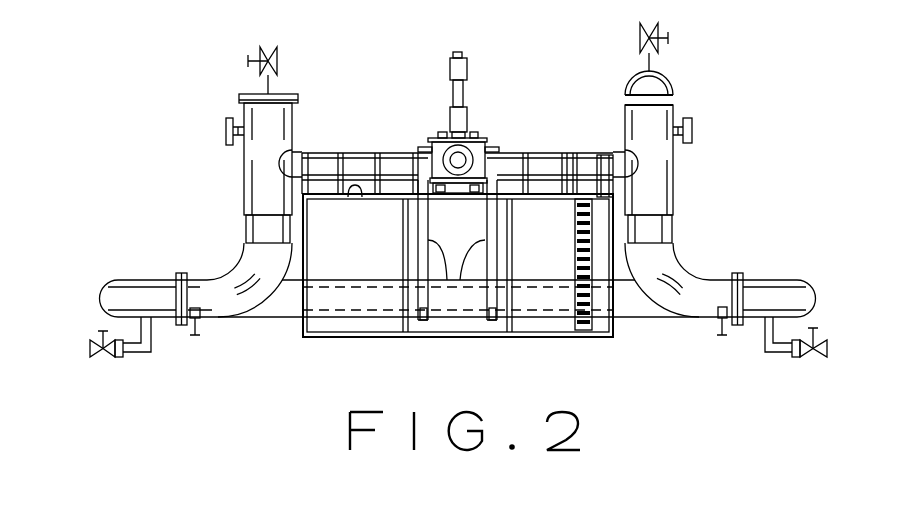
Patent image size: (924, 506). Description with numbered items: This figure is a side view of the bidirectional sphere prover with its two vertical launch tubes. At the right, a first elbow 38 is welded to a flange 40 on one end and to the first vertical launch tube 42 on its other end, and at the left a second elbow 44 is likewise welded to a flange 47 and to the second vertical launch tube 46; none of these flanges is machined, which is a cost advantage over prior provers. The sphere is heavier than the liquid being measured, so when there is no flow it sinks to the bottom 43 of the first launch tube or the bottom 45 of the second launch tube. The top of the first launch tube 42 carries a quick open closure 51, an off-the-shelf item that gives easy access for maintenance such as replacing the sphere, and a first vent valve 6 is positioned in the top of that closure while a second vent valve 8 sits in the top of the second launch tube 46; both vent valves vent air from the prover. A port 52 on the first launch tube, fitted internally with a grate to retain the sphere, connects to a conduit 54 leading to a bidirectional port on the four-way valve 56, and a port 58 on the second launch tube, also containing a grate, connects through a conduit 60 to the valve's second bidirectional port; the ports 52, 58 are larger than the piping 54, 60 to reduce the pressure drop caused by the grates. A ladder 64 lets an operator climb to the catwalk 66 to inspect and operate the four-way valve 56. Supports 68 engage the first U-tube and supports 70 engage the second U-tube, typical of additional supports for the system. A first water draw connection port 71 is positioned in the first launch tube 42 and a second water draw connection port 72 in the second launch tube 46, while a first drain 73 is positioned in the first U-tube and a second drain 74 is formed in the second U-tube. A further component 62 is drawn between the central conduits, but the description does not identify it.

The first vent valve 6 is at (653, 26).
The second vent valve 8 is at (260, 45).
The first elbow 38 is at (662, 307).
The flange 40 is at (730, 282).
The first vertical launch tube 42 is at (673, 168).
The bottom of the first launch tube 43 is at (672, 232).
The second elbow 44 is at (257, 305).
The bottom of the second launch tube 45 is at (246, 232).
The second vertical launch tube 46 is at (244, 172).
The flange 47 is at (182, 275).
The quick open closure 51 is at (668, 78).
The port 52 is at (611, 150).
The conduit 54 is at (548, 152).
The 4-way valve 56 is at (480, 133).
The port 58 is at (305, 152).
The conduit 60 is at (377, 152).
The chute 62 is at (460, 268).
The ladder 64 is at (573, 307).
The catwalk 66 is at (350, 197).
The supports 68 is at (722, 338).
The supports 70 is at (197, 340).
The first water draw connection port 71 is at (692, 120).
The second water draw connection port 72 is at (226, 130).
The first drain 73 is at (817, 362).
The second drain 74 is at (103, 362).